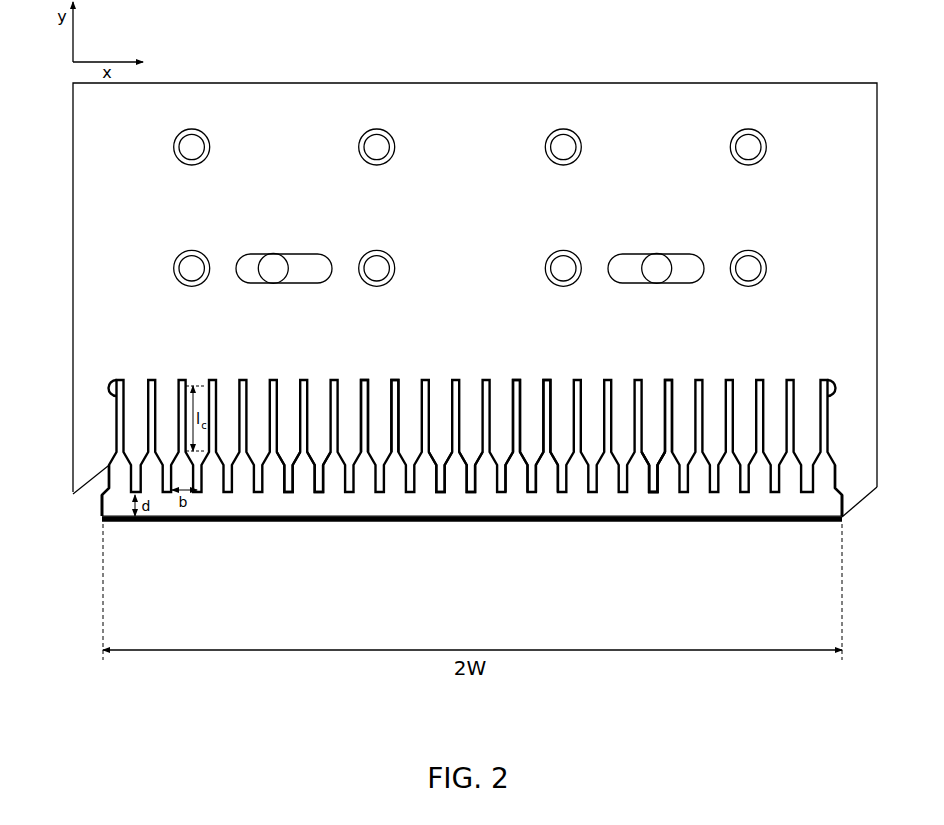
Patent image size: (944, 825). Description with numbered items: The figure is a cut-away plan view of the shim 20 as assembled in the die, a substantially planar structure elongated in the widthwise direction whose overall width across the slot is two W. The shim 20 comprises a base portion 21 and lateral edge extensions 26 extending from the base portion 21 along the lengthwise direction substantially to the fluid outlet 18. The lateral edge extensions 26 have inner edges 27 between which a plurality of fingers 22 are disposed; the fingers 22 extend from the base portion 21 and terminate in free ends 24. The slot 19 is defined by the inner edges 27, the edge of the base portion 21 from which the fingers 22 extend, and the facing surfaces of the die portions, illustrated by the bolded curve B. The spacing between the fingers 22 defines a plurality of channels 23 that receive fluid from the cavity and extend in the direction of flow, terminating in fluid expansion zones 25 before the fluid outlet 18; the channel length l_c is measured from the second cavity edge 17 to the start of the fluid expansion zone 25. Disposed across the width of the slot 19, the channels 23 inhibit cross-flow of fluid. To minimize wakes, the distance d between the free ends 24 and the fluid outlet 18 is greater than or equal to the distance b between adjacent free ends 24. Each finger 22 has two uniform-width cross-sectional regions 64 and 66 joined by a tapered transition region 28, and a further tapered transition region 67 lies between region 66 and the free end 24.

The second cavity edge 17 is at (182, 383).
The fluid outlet 18 is at (580, 522).
The slot 19 is at (260, 503).
The shim 20 is at (270, 125).
The base portion 21 is at (470, 207).
The fingers 22 is at (322, 443).
The channels 23 is at (397, 455).
The free ends 24 is at (472, 473).
The fluid expansion zones 25 is at (550, 483).
The lateral edge extensions 26 is at (75, 490).
The inner edges 27 is at (108, 492).
The tapered transition region 28 is at (660, 465).
The cross-sectional region 64 is at (672, 403).
The cross-sectional region 66 is at (657, 483).
The tapered transition region 67 is at (652, 495).
The bolded curve B is at (73, 494).